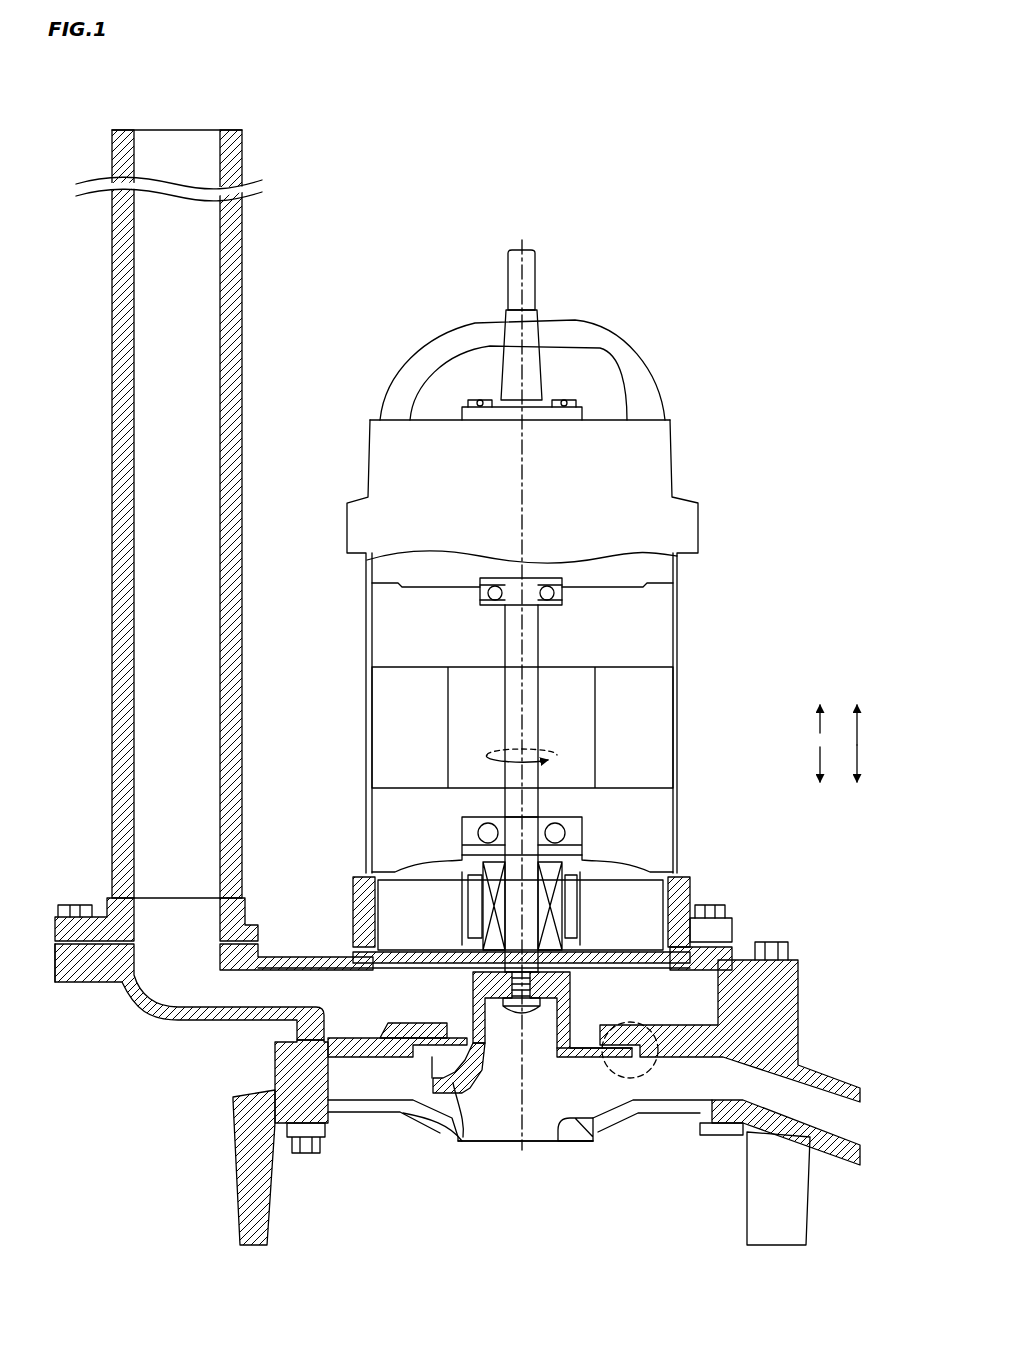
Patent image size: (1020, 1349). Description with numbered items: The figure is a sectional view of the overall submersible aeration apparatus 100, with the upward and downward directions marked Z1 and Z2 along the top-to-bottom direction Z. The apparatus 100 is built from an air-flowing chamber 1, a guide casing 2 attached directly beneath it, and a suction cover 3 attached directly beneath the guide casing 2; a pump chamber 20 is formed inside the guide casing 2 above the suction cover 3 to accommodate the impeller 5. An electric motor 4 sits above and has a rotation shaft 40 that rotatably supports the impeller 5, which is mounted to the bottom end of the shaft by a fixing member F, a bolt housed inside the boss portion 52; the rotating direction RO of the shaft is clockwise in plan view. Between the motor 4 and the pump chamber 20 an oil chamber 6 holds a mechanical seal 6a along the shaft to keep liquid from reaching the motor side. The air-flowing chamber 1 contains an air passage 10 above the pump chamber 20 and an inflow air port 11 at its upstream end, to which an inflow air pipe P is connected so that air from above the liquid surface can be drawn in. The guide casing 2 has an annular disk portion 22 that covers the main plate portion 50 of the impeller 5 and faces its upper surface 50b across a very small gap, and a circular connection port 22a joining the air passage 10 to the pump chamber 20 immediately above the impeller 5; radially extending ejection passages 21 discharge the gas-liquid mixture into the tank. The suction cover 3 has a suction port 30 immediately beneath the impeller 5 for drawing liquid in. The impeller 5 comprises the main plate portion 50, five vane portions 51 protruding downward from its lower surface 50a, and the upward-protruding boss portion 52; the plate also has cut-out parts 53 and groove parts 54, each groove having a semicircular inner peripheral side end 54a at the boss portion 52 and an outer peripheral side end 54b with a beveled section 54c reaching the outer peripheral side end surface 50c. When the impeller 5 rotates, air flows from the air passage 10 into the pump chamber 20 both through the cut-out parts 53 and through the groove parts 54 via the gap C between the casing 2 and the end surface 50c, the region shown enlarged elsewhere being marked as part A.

The submersible aeration apparatus 100 is at (788, 378).
The air-flowing chamber 1 is at (205, 1026).
The guide casing 2 is at (825, 1044).
The suction cover 3 is at (593, 1146).
The electric motor 4 is at (683, 675).
The impeller 5 is at (468, 972).
The oil chamber 6 is at (647, 893).
The mechanical seal 6a is at (553, 928).
The air passage 10 is at (240, 1007).
The inflow air port 11 is at (215, 898).
The pump chamber 20 is at (425, 1088).
The ejection passage 21 is at (828, 1128).
The annular disk portion 22 is at (432, 1023).
The connection port 22a is at (450, 1030).
The suction port 30 is at (585, 1143).
The rotation shaft 40 is at (538, 653).
The main plate portion 50 is at (402, 1045).
The lower surface 50a is at (600, 1128).
The upper surface 50b is at (590, 1118).
The outer peripheral side end surface 50c is at (402, 1048).
The vane portion 51 is at (463, 1094).
The boss portion 52 is at (476, 986).
The cut-out part 53 is at (440, 1083).
The groove part 54 is at (616, 1024).
The inner peripheral side end 54a is at (578, 1056).
The outer peripheral side end 54b is at (684, 1048).
The beveled section 54c is at (640, 1042).
The inflow air pipe P is at (235, 392).
The rotating direction RO is at (535, 757).
The top-to-bottom direction Z is at (866, 743).
The upward direction Z1 is at (835, 723).
The downward direction Z2 is at (835, 764).
The part A is at (656, 1022).
The gap C is at (628, 1062).
The fixing member F is at (515, 1008).